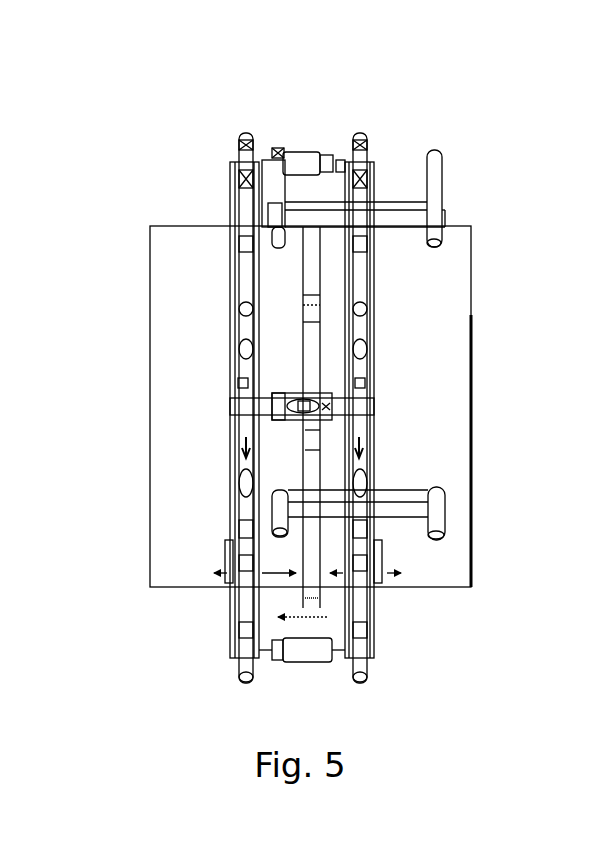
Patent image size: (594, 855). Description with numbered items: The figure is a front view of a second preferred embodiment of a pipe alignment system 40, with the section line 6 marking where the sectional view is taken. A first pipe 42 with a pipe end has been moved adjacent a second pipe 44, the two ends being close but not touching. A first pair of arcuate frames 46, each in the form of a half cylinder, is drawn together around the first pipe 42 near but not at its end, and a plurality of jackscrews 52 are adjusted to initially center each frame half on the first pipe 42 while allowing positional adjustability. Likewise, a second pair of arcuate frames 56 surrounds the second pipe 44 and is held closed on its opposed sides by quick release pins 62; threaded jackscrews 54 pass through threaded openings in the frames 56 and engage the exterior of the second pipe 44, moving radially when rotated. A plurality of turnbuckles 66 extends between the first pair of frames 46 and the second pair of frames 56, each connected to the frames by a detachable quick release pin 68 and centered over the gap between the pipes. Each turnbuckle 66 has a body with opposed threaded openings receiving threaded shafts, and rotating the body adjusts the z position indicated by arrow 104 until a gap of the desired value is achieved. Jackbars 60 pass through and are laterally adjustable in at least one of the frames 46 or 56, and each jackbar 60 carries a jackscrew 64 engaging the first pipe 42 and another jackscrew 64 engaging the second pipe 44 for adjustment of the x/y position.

The section line 6- 6 is at (28, 695).
The pipe alignment system 40 is at (478, 128).
The first pipe 42 is at (168, 573).
The second pipe 44 is at (437, 318).
The first pair of arcuate frames 46 is at (236, 374).
The jackscrews 52 is at (250, 128).
The jackscrews 54 is at (358, 128).
The second pair of arcuate frames 56 is at (380, 364).
The jackbars 60 is at (388, 200).
The quick release pins 62 is at (412, 570).
The jackscrews 64 is at (442, 176).
The turnbuckles 66 is at (330, 410).
The quick release pin 68 is at (232, 452).
The arrow 104 is at (300, 613).